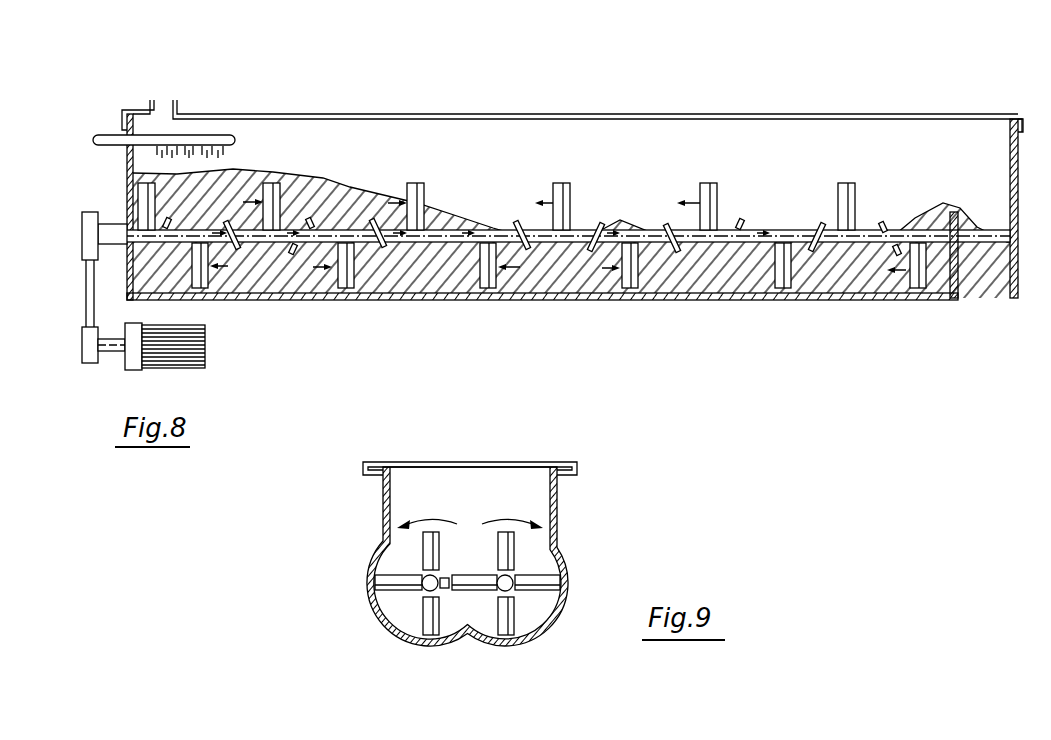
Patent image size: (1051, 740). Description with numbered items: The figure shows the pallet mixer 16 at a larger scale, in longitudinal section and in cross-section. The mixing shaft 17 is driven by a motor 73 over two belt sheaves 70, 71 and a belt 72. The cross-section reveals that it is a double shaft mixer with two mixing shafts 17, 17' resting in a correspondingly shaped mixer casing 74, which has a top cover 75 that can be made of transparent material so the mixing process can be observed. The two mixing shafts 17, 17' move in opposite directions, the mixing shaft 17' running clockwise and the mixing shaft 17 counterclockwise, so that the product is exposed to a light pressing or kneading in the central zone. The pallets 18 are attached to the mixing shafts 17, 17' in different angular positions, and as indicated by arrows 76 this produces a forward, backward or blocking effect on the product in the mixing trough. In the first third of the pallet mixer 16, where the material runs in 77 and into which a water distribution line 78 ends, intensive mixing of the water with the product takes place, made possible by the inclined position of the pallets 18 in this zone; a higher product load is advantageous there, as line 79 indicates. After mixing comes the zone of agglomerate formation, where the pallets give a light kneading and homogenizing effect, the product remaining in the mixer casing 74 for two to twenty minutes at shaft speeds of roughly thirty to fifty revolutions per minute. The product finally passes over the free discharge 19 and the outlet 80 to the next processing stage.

In FIG. 8, the pallet mixer 16 is at (435, 142).
In FIG. 8, the mixing shaft 17 is at (554, 280).
In FIG. 9, the mixing shaft 17 is at (404, 605).
In FIG. 9, the mixing shaft 17' is at (506, 605).
In FIG. 8, the pallets 18 is at (475, 294).
In FIG. 8, the free discharge 19 is at (947, 292).
In FIG. 8, the belt sheave 70 is at (92, 233).
In FIG. 8, the belt sheave 71 is at (92, 348).
In FIG. 8, the belt 72 is at (90, 291).
In FIG. 8, the motor 73 is at (207, 347).
In FIG. 9, the mixer casing 74 is at (383, 512).
In FIG. 8, the top cover 75 is at (650, 116).
In FIG. 8, the arrows 76 is at (613, 291).
In FIG. 8, the material run-in 77 is at (190, 103).
In FIG. 8, the water distribution line 78 is at (114, 137).
In FIG. 8, the line 79 is at (325, 174).
In FIG. 8, the outlet 80 is at (985, 273).